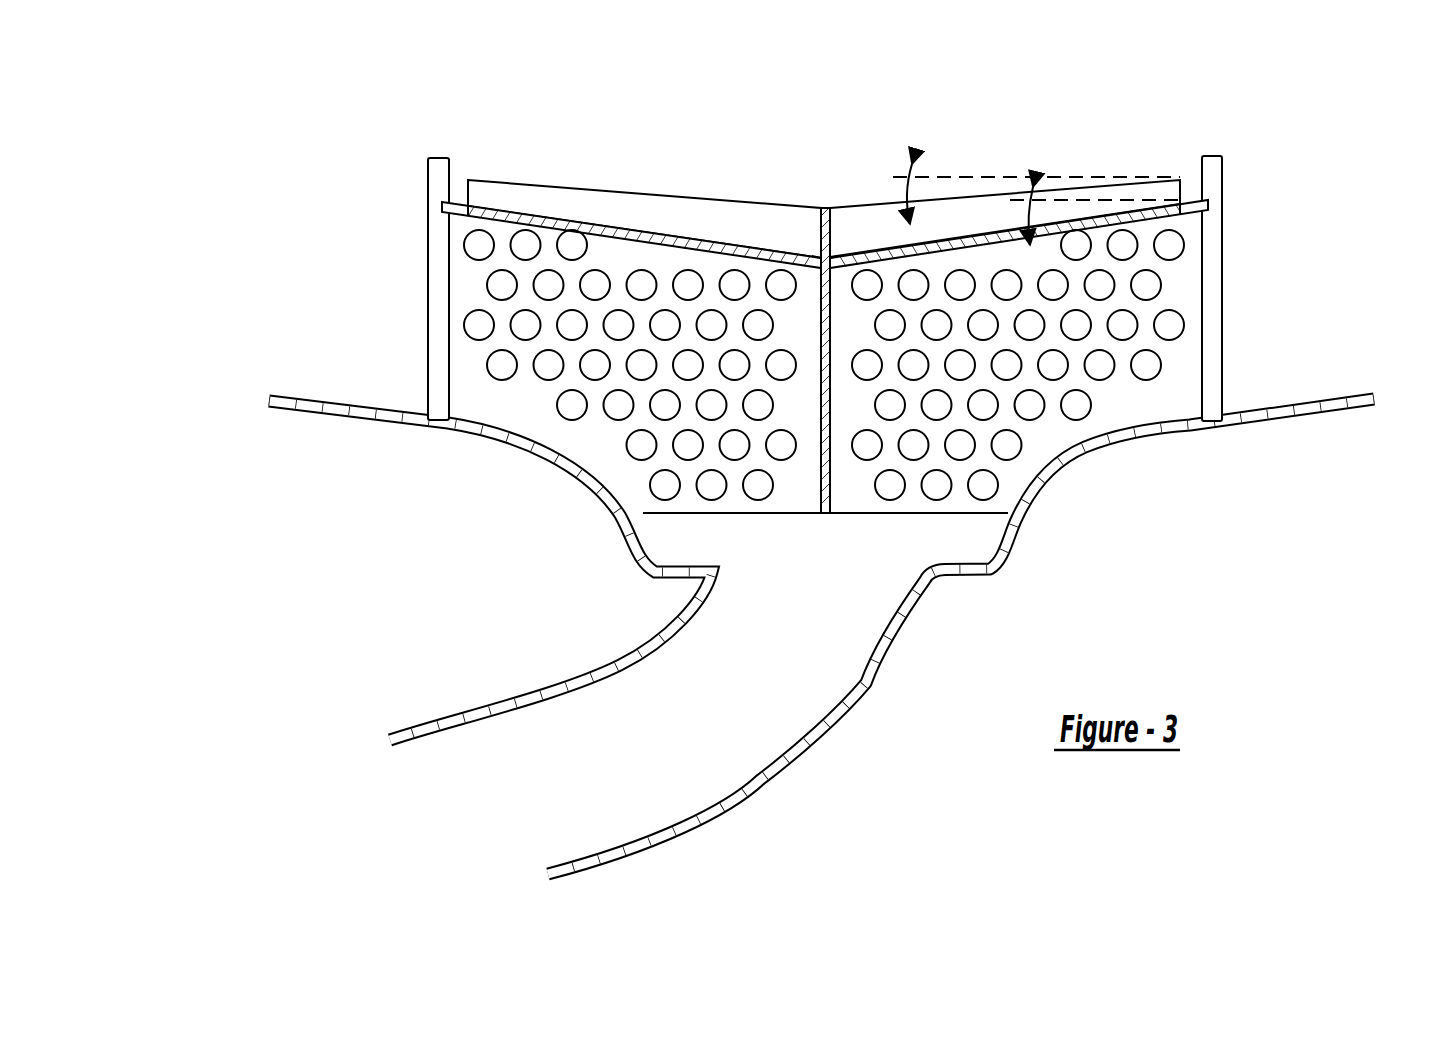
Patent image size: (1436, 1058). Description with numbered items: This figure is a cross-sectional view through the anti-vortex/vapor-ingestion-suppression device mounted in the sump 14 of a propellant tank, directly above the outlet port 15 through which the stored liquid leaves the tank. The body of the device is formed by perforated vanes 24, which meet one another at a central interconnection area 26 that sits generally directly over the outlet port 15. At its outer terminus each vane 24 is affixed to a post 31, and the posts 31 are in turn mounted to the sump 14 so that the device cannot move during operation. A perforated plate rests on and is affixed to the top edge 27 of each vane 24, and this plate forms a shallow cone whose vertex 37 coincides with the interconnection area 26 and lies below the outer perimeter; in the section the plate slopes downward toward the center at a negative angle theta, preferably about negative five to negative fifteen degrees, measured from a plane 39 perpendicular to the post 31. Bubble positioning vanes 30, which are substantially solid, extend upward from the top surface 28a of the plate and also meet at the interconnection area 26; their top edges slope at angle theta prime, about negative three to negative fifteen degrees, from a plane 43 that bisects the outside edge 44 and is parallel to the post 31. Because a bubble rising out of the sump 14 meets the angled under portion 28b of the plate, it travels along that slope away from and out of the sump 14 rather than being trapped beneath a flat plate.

The sump 14 is at (985, 538).
The outlet port 15 is at (836, 537).
The vanes 24 is at (478, 388).
The interconnection area 26 is at (826, 208).
The top edge 27 is at (493, 240).
The top surface 28a is at (666, 232).
The angled under portion 28b is at (937, 262).
The bubble positioning vanes 30 is at (567, 205).
The post 31 is at (440, 190).
The vertex 37 is at (820, 260).
The plane 39 is at (1122, 189).
The plane 43 is at (973, 177).
The outside edge 44 is at (1200, 176).